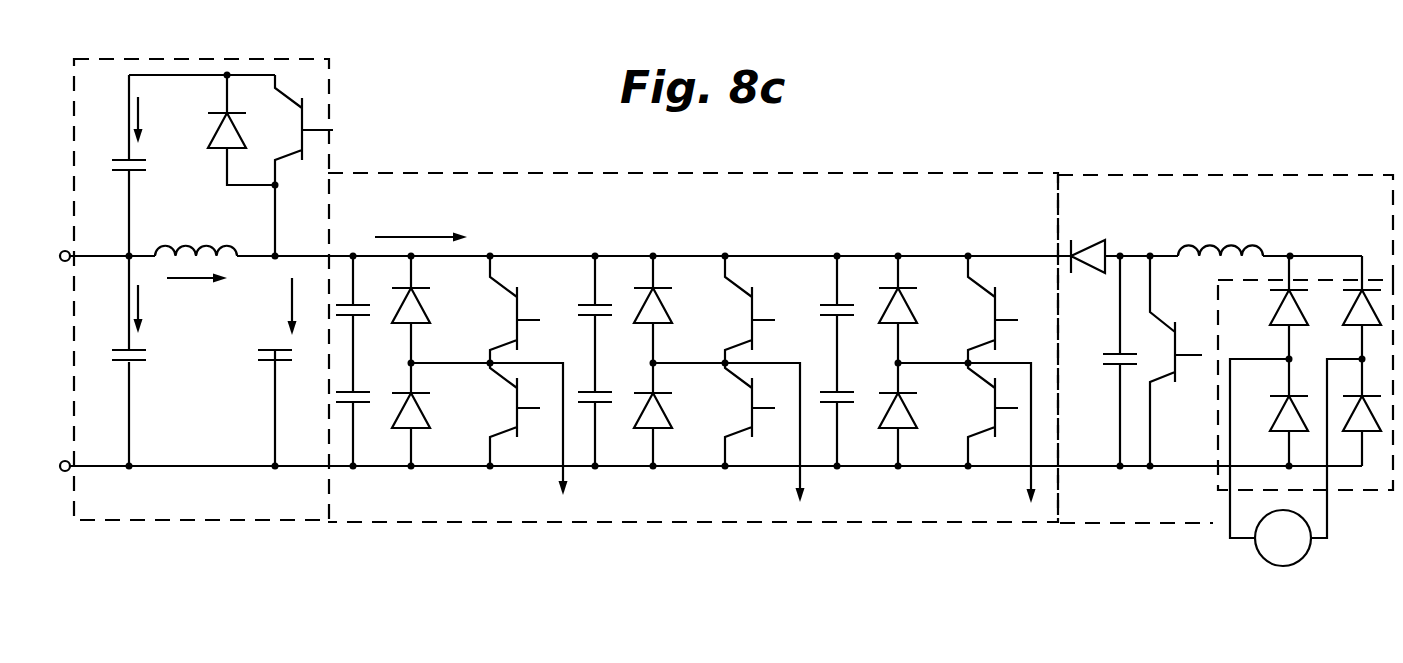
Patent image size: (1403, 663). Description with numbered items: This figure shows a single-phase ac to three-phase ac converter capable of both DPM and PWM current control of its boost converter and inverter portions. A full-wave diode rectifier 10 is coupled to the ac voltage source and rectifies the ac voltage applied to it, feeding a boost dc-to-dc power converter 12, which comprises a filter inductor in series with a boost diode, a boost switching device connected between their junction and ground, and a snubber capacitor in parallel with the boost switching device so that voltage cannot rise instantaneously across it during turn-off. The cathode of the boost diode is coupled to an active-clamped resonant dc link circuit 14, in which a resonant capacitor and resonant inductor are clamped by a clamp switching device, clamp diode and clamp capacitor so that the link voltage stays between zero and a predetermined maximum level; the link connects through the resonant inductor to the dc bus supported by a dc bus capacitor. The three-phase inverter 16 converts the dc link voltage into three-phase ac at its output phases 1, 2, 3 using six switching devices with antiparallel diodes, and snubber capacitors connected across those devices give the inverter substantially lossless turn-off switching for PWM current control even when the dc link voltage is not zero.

The full-wave diode rectifier 10 is at (1352, 493).
The boost dc-to-dc power converter 12 is at (1268, 175).
The active-clamped resonant dc link circuit 14 is at (329, 158).
The three-phase inverter 16 is at (693, 316).
The output phase 1 is at (499, 443).
The output phase 2 is at (740, 443).
The output phase 3 is at (976, 443).